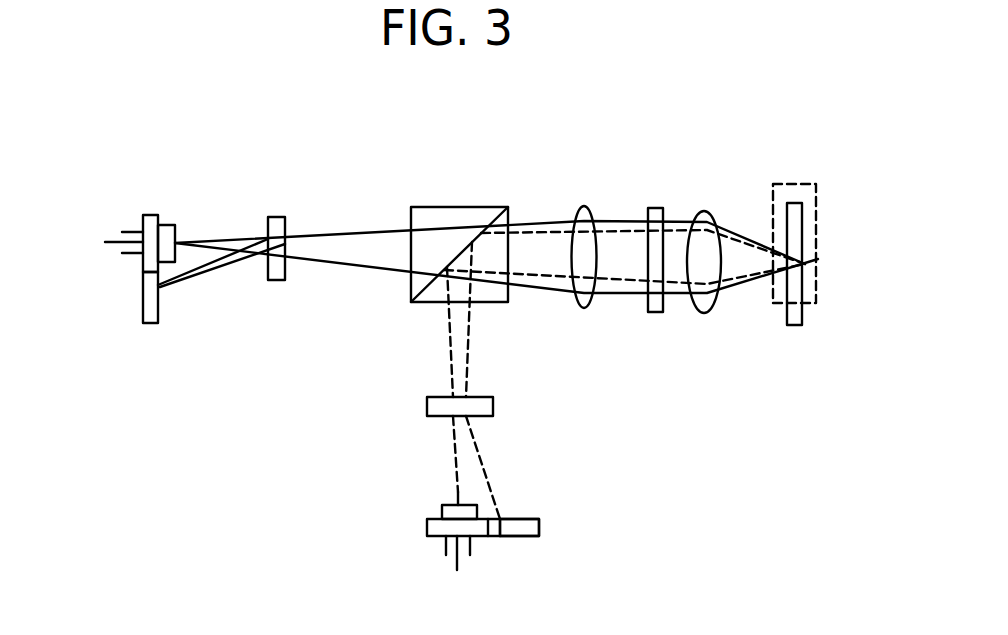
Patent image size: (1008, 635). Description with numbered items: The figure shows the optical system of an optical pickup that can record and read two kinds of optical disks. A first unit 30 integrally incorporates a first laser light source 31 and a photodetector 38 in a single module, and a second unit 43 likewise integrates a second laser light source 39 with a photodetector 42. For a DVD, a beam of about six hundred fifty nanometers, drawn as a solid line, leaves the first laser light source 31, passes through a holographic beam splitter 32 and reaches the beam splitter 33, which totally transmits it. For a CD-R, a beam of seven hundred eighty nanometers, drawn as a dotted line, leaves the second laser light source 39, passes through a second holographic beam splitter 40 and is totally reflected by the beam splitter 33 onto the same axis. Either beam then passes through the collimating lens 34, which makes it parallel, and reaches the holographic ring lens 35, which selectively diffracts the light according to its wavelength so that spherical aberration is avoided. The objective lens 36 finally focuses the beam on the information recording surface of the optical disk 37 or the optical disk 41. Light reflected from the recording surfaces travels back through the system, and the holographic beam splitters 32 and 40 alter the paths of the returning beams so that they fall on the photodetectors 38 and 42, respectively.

The unit 30 is at (150, 218).
The first laser light source 31 is at (168, 225).
The holographic beam splitter 32 is at (277, 217).
The beam splitter 33 is at (463, 207).
The collimating lens 34 is at (590, 207).
The holographic ring lens 35 is at (657, 312).
The objective lens 36 is at (704, 211).
The optical disk 37 is at (795, 325).
The photodetector 38 is at (150, 283).
The second laser light source 39 is at (442, 509).
The holographic beam splitter 40 is at (427, 405).
The optical disk 41 is at (816, 230).
The photodetector 42 is at (500, 537).
The unit 43 is at (437, 530).